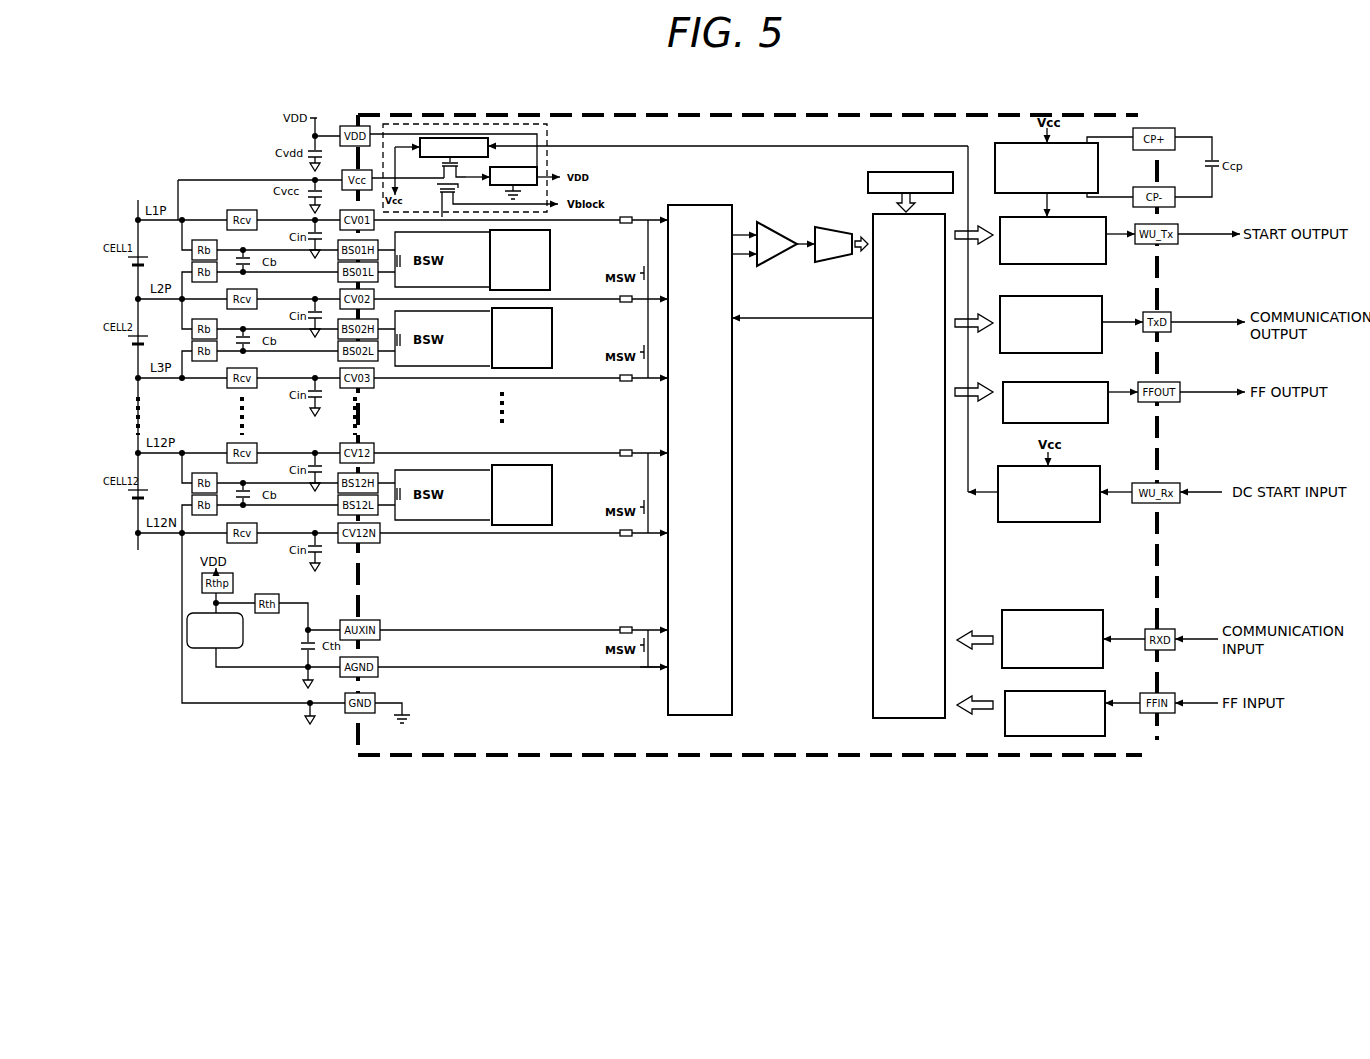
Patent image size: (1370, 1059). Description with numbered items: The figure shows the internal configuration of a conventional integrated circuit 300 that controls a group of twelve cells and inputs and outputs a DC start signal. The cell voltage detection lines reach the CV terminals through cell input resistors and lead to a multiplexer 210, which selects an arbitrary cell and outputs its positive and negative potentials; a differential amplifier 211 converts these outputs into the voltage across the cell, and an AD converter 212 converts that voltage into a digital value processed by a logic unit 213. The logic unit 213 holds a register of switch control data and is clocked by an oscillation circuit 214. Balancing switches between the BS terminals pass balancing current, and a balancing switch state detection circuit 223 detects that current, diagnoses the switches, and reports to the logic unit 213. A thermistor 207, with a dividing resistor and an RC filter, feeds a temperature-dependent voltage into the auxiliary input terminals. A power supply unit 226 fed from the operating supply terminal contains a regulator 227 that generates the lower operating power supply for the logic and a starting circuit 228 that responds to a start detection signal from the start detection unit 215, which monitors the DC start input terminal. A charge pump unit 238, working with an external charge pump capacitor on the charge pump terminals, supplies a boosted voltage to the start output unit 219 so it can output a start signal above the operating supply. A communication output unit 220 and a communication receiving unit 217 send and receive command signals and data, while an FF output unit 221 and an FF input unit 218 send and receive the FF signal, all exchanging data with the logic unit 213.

The integrated circuit 300 is at (832, 110).
The power supply unit 226 is at (527, 128).
The starting circuit 228 is at (454, 147).
The regulator 227 is at (513, 176).
The balancing switch state detection circuit 223 is at (521, 377).
The multiplexer 210 is at (700, 460).
The differential amplifier 211 is at (777, 232).
The AD converter 212 is at (833, 233).
The logic unit 213 is at (909, 466).
The oscillation circuit 214 is at (910, 182).
The charge pump unit 238 is at (1046, 168).
The start output unit 219 is at (1053, 240).
The communication output unit 220 is at (1051, 324).
The FF output unit 221 is at (1055, 402).
The start detection unit 215 is at (1049, 494).
The communication receiving unit 217 is at (1052, 639).
The FF input unit 218 is at (1055, 713).
The thermistor 207 is at (215, 630).